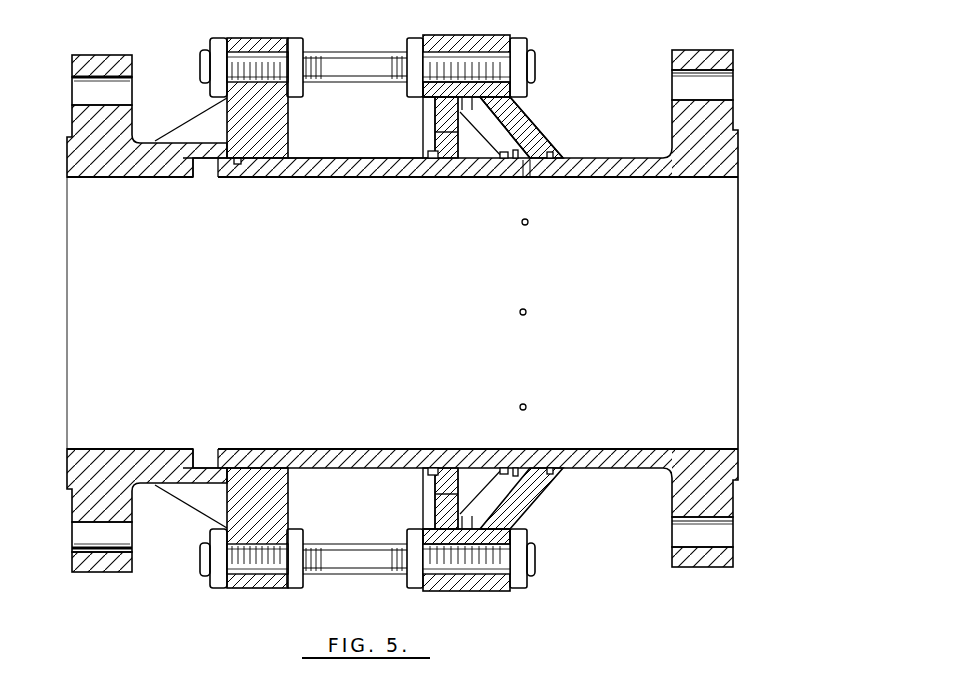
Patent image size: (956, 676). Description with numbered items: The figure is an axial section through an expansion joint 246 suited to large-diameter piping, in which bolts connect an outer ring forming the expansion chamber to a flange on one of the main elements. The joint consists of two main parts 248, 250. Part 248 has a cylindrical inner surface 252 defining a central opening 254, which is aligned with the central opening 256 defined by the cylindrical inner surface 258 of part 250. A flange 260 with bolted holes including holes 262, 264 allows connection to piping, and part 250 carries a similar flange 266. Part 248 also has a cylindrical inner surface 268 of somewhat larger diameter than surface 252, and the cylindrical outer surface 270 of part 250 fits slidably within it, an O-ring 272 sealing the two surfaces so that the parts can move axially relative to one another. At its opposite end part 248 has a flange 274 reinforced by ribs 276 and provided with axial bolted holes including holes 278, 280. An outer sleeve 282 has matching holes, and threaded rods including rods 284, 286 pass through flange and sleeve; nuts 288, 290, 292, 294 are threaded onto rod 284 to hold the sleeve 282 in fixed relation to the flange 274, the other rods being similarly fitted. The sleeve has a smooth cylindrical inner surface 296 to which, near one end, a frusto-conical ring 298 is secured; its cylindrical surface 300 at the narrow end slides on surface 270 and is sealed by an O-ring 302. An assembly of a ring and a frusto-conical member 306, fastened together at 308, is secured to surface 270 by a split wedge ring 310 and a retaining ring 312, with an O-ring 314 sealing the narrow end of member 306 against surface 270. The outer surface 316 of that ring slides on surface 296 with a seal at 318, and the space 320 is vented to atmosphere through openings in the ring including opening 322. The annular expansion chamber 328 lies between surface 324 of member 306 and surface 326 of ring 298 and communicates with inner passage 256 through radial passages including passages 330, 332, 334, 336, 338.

The expansion joint 246 is at (409, 295).
The main part 248 is at (158, 167).
The main part 250 is at (613, 166).
The cylindrical inner surface 252 is at (120, 180).
The central opening 254 is at (103, 333).
The central opening 256 is at (693, 295).
The cylindrical inner surface 258 is at (674, 178).
The flange 260 is at (105, 56).
The bolted hole 262 is at (80, 94).
The bolted hole 264 is at (82, 548).
The flange 266 is at (727, 118).
The cylindrical inner surface 268 is at (205, 162).
The cylindrical outer surface 270 is at (307, 158).
The O-ring 272 is at (238, 158).
The flange 274 is at (250, 40).
The rib 276 is at (187, 132).
The axial bolted hole 278 is at (262, 86).
The axial bolted hole 280 is at (267, 549).
The outer sleeve 282 is at (470, 40).
The threaded rod 284 is at (345, 58).
The threaded rod 286 is at (364, 552).
The nut 288 is at (213, 40).
The nut 290 is at (296, 40).
The nut 292 is at (415, 40).
The nut 294 is at (522, 40).
The cylindrical inner surface 296 is at (422, 107).
The frusto-conical ring 298 is at (525, 125).
The cylindrical surface 300 is at (533, 160).
The O-ring 302 is at (553, 158).
The frusto-conical member 306 is at (495, 150).
The fastening location 308 is at (497, 112).
The split wedge ring 310 is at (427, 162).
The retaining ring 312 is at (523, 178).
The O-ring 314 is at (538, 139).
The outer surface 316 is at (440, 86).
The seal 318 is at (442, 100).
The space 320 is at (469, 476).
The opening 322 is at (435, 500).
The surface 324 is at (495, 500).
The surface 326 is at (527, 498).
The expansion chamber 328 is at (540, 470).
The radial passage 330 is at (527, 456).
The radial passage 332 is at (526, 405).
The radial passage 334 is at (526, 310).
The radial passage 336 is at (528, 224).
The radial passage 338 is at (530, 178).